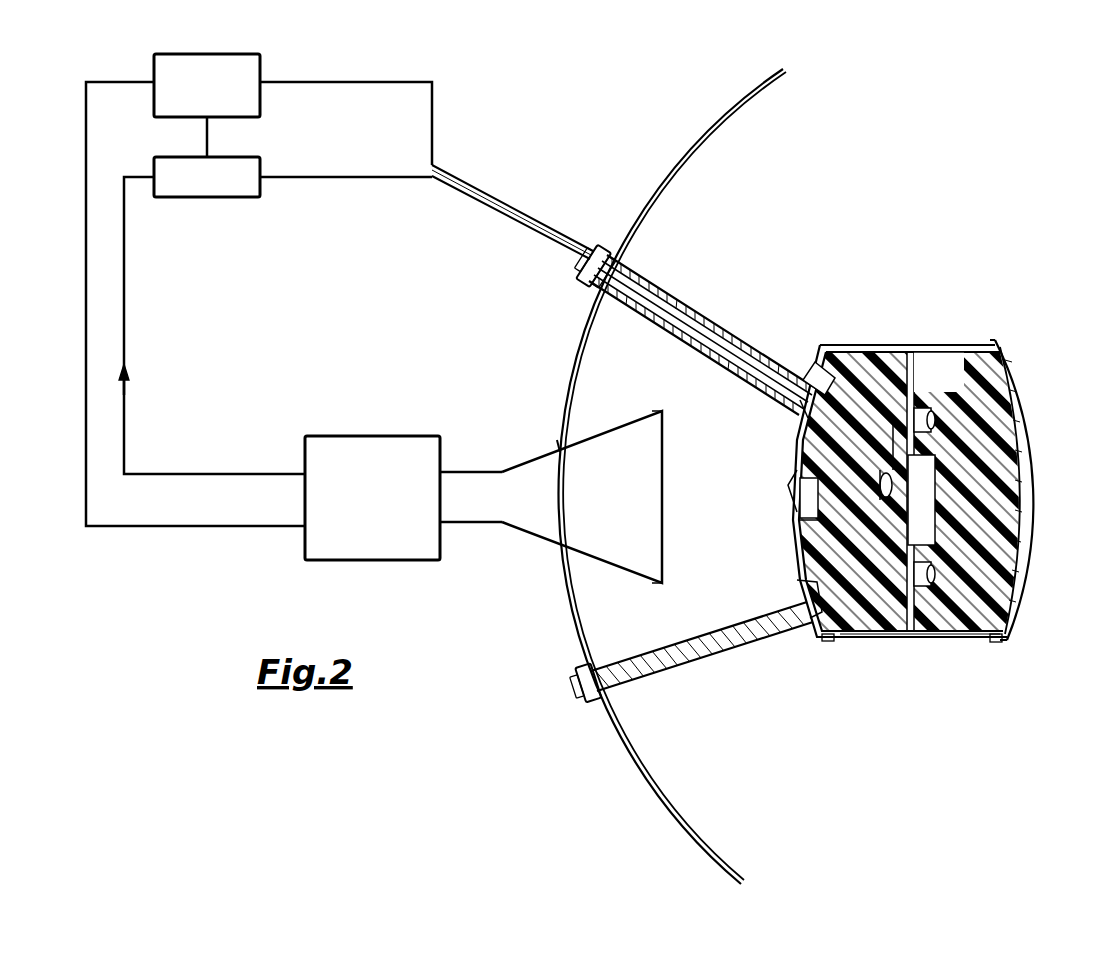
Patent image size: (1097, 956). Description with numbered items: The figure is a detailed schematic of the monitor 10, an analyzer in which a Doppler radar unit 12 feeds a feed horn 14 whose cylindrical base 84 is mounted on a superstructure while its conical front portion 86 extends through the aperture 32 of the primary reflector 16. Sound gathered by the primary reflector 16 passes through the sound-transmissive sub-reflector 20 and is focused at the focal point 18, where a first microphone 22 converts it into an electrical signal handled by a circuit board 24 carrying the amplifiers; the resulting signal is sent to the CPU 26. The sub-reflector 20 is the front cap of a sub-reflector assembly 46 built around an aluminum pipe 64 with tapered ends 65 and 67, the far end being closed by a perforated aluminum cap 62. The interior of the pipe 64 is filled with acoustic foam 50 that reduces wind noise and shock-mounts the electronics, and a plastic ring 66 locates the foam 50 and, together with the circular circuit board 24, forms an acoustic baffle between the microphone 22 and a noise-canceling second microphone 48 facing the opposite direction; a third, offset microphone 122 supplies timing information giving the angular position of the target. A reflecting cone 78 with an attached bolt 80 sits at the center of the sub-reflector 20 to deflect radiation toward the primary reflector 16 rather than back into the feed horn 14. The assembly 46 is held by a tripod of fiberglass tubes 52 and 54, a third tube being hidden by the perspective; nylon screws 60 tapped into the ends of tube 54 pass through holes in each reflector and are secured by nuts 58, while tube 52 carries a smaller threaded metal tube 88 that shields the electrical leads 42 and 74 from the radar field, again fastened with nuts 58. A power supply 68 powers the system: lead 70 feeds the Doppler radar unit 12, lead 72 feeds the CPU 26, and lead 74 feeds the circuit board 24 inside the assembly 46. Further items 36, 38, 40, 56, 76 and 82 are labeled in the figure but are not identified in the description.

The monitor 10 is at (848, 58).
The Doppler radar unit 12 is at (365, 436).
The feed horn 14 is at (592, 432).
The primary reflector 16 is at (560, 612).
The focal point 18 is at (878, 490).
The sub-reflector 20 is at (812, 618).
The microphone 22 is at (888, 510).
The circuit board 24 is at (938, 488).
The CPU 26 is at (262, 165).
The aperture 32 is at (553, 446).
The signal line 36 is at (124, 337).
The control line 38 is at (360, 176).
The signal flow arrow 40 is at (130, 378).
The electrical leads 42 is at (484, 206).
The sub-reflector assembly 46 is at (870, 344).
The noise-canceling second microphone 48 is at (932, 418).
The acoustic foam 50 is at (948, 634).
The tube 52 is at (715, 304).
The tube 54 is at (684, 672).
The tube sheath 56 is at (750, 332).
The nut 58 is at (584, 283).
The nylon screw 60 is at (575, 701).
The perforated aluminum cap 62 is at (1030, 443).
The aluminum pipe 64 is at (942, 346).
The tapered end 65 is at (990, 641).
The plastic ring 66 is at (918, 372).
The tapered end 67 is at (828, 640).
The power supply 68 is at (240, 52).
The electrical lead 70 is at (122, 76).
The lead 72 is at (212, 142).
The lead 74 is at (494, 202).
The dome cover 76 is at (1018, 388).
The reflecting cone 78 is at (787, 478).
The bolt 80 is at (795, 523).
The front opening 82 is at (784, 494).
The base of horn 84 is at (472, 468).
The front portion of horn 86 is at (588, 562).
The smaller metal tube 88 is at (592, 247).
The third offset microphone 122 is at (940, 588).